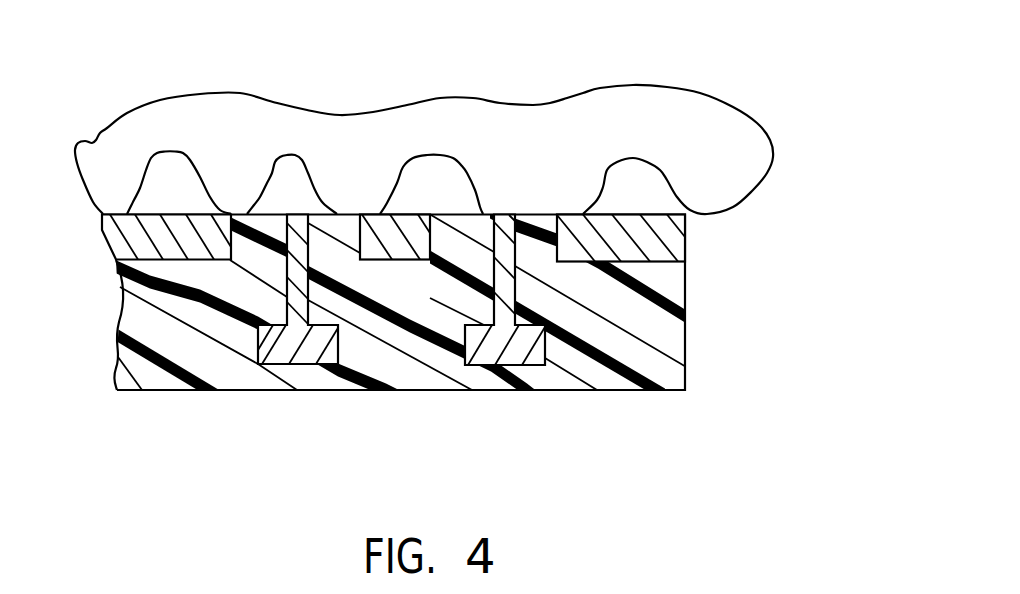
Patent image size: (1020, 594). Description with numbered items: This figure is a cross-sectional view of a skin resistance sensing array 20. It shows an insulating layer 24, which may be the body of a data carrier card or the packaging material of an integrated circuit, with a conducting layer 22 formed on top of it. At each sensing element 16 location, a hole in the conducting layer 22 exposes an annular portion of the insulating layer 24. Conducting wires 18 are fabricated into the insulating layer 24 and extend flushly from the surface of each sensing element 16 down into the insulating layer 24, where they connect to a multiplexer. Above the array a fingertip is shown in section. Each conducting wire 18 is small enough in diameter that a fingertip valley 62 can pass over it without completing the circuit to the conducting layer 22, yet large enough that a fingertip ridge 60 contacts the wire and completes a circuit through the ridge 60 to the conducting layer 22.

The sensing element 16 is at (228, 273).
The conducting wire 18 is at (297, 355).
The sensing array 20 is at (768, 228).
The conducting layer 22 is at (123, 237).
The insulating layer 24 is at (653, 320).
The fingertip ridge 60 is at (528, 173).
The fingertip valley 62 is at (292, 183).